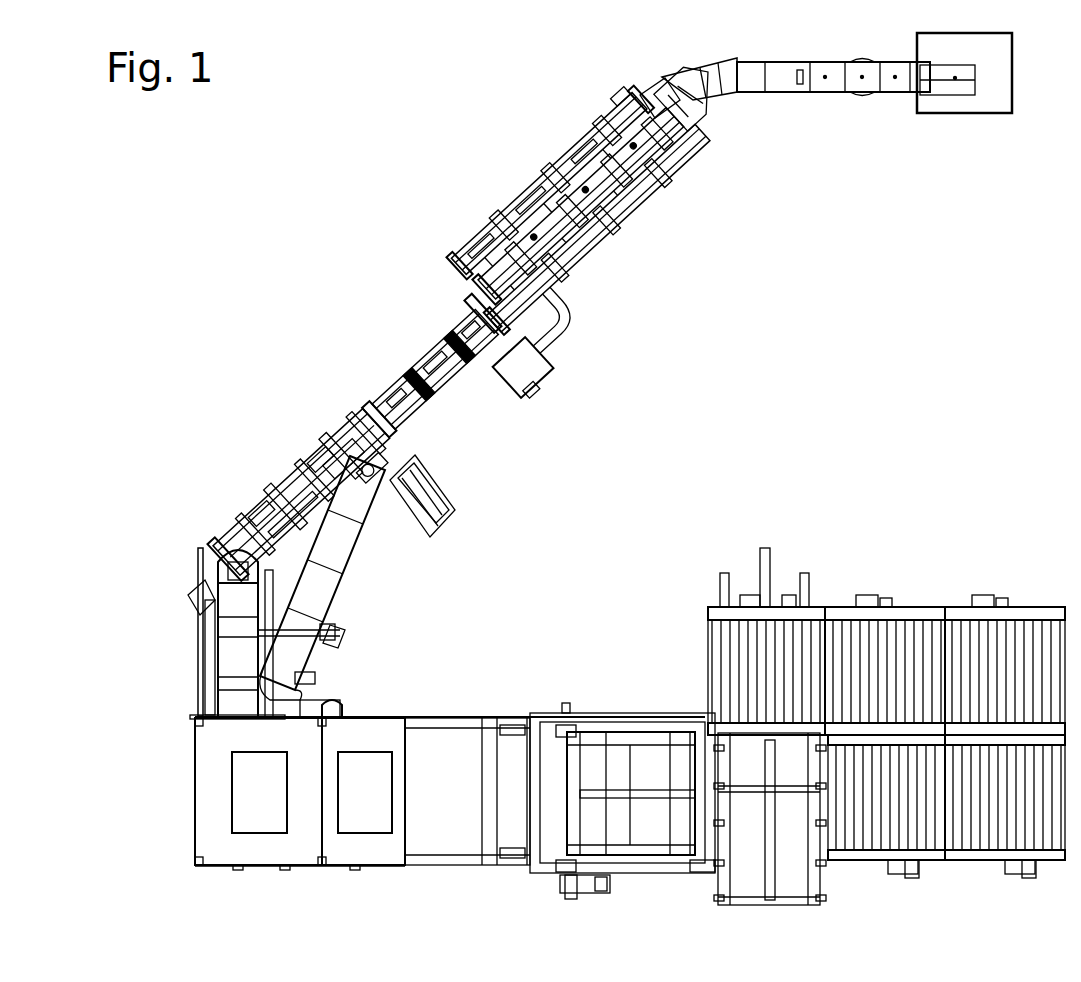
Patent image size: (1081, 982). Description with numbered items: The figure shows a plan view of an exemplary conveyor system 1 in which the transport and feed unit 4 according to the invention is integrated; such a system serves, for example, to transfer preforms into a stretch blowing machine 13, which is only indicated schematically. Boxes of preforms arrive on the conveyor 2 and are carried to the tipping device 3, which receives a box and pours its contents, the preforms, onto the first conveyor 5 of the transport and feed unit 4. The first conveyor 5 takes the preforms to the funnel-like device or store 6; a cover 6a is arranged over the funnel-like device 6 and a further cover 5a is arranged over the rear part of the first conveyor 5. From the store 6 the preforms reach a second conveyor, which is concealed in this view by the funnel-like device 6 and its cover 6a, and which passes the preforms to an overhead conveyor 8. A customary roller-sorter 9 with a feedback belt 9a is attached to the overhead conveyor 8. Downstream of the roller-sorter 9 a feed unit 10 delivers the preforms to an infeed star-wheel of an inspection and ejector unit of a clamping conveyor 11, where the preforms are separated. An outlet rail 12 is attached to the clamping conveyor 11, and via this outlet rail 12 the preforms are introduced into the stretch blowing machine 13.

The conveyor system 1 is at (267, 265).
The conveyor 2 is at (913, 592).
The tipping device 3 is at (618, 705).
The transport and feed unit 4 is at (356, 710).
The first conveyor 5 is at (455, 735).
The cover 5a is at (375, 852).
The funnel-like device or store 6 is at (256, 872).
The cover 6a is at (215, 793).
The overhead conveyor 8 is at (192, 663).
The roller-sorter 9 is at (278, 486).
The feedback belt 9a is at (348, 572).
The feed unit 10 is at (441, 400).
The clamping conveyor 11 is at (601, 272).
The outlet rail 12 is at (801, 122).
The stretch blowing machine 13 is at (1008, 113).